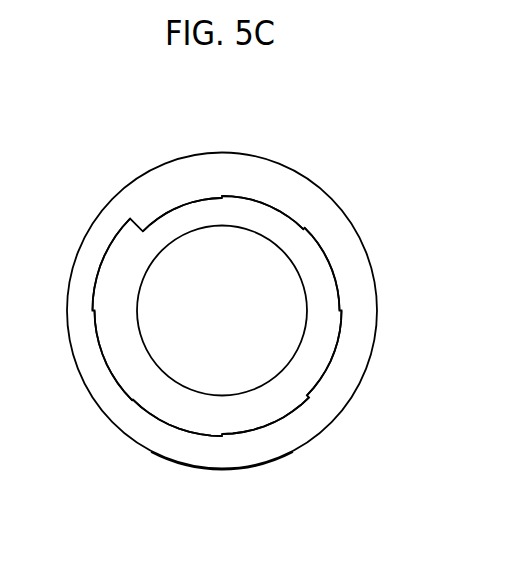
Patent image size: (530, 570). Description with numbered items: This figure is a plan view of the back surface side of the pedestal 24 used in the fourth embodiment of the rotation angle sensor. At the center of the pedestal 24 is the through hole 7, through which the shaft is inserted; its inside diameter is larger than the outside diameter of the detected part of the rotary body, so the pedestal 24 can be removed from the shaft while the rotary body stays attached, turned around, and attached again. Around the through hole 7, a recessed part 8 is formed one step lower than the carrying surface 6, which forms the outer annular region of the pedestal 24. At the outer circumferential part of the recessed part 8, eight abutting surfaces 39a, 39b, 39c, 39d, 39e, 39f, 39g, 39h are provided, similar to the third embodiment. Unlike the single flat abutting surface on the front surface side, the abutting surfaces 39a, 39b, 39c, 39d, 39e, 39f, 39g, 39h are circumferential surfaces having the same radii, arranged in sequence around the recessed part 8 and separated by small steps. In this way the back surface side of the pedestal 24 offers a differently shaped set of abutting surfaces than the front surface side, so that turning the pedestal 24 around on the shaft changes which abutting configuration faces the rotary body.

The carrying surface 6 is at (87, 345).
The through hole 7 is at (229, 322).
The recessed part 8 is at (160, 403).
The pedestal 24 is at (293, 452).
The abutting surface 39a is at (207, 202).
The abutting surface 39b is at (276, 208).
The abutting surface 39c is at (322, 247).
The abutting surface 39d is at (337, 333).
The abutting surface 39e is at (298, 404).
The abutting surface 39f is at (205, 438).
The abutting surface 39g is at (128, 394).
The abutting surface 39h is at (113, 248).